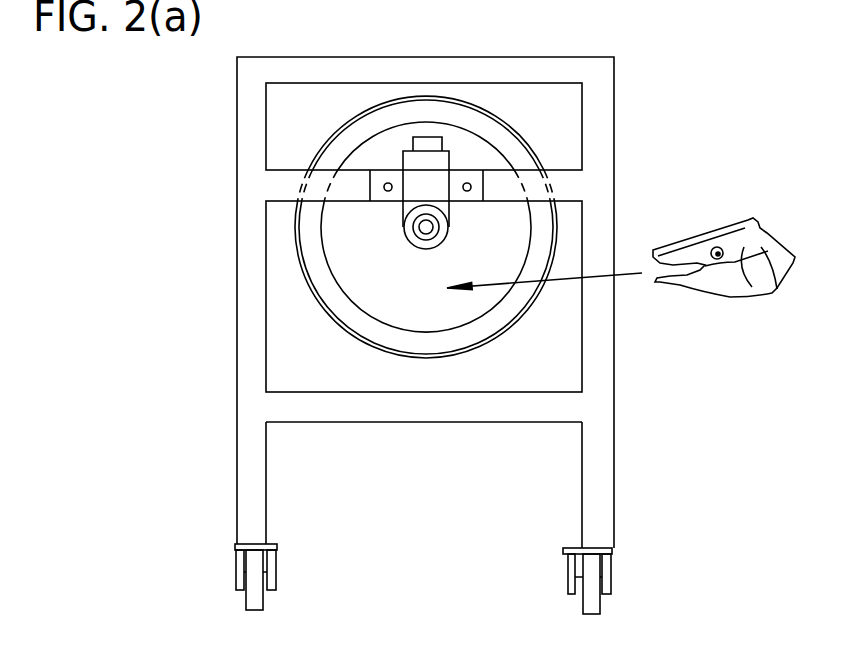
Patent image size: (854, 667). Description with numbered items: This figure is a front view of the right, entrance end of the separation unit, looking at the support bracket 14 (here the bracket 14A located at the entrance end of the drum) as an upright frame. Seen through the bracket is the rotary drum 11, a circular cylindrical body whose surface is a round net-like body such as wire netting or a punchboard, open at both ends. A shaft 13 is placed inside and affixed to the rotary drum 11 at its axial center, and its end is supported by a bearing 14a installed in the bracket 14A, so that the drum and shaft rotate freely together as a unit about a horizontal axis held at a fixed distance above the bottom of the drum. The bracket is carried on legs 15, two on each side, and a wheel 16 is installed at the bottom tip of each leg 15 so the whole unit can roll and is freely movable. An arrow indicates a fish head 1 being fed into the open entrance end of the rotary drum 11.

The fish head 1 is at (720, 222).
The rotary drum 11 is at (312, 272).
The shaft 13 is at (405, 233).
The support bracket 14 is at (610, 91).
The support bracket 14A is at (505, 236).
The bearing 14a is at (445, 157).
The legs 15 is at (252, 483).
The wheel 16 is at (247, 598).